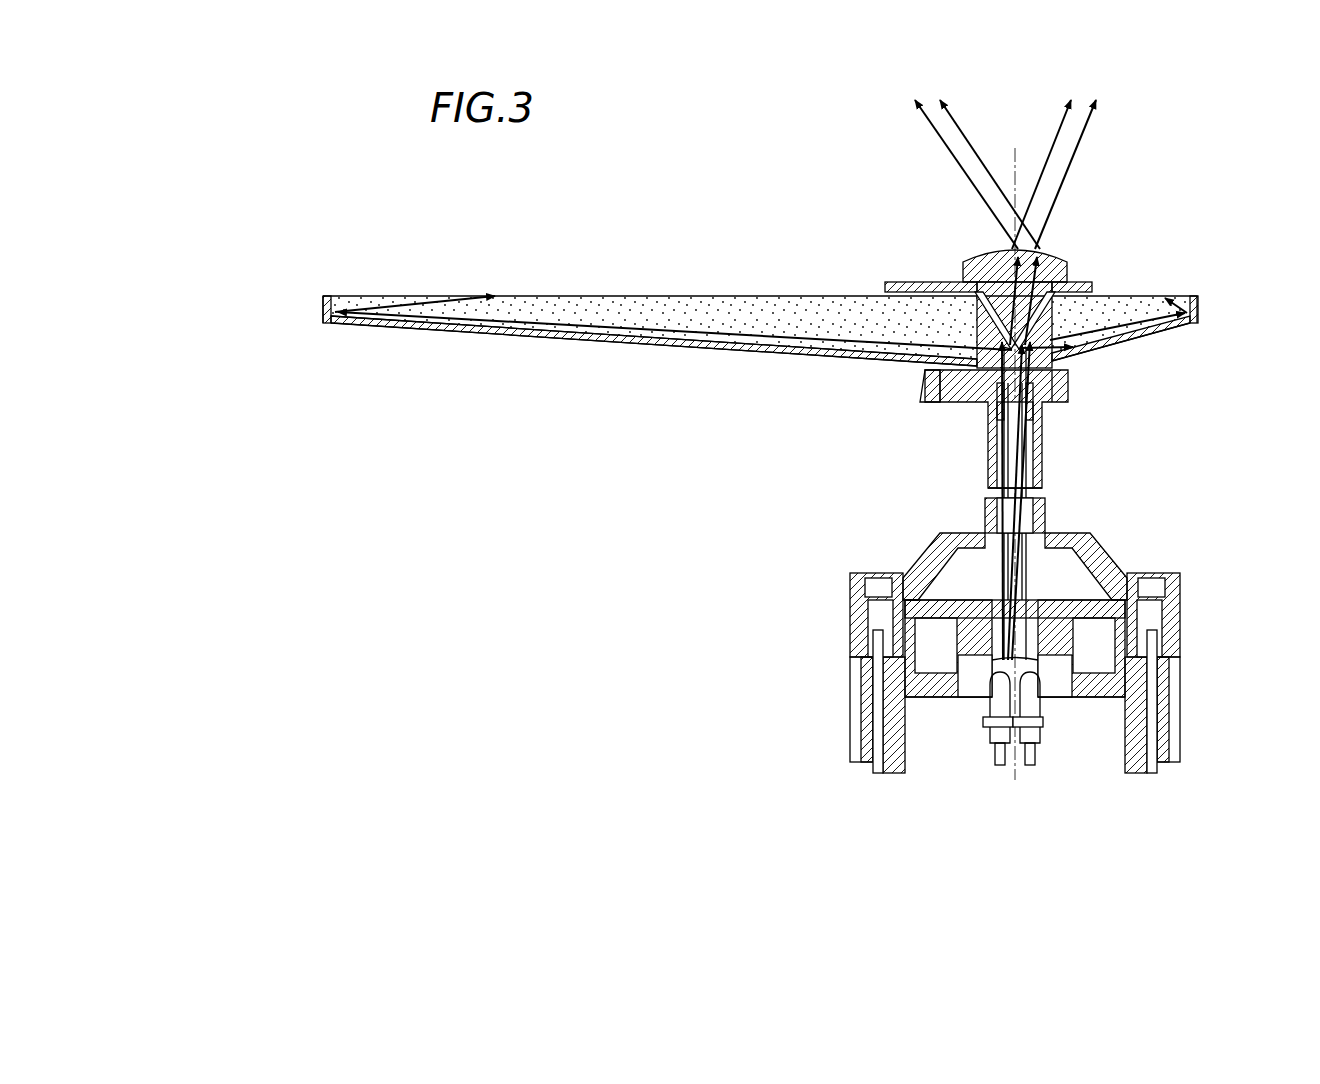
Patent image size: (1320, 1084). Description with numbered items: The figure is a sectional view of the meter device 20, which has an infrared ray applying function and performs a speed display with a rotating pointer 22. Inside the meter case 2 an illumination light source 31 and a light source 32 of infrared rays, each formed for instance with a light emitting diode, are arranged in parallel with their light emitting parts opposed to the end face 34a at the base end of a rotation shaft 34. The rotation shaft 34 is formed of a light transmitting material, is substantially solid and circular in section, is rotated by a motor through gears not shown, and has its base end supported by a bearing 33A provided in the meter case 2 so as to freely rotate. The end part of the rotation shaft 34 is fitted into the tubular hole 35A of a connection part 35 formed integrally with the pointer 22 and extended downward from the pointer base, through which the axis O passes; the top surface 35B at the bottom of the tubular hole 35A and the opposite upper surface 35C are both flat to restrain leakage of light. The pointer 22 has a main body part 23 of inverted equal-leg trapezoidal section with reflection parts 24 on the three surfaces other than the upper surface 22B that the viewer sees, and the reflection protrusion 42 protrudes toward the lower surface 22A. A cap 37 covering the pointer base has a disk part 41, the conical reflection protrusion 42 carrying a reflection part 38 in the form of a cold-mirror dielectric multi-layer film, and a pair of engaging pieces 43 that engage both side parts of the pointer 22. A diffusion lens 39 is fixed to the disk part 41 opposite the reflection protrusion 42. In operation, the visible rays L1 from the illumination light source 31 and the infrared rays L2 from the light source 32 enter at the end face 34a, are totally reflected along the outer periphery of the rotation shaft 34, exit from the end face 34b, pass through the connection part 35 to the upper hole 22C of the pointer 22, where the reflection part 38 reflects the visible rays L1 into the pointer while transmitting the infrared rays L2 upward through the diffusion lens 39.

The meter device 20 is at (724, 186).
The pointer 22 is at (544, 283).
The lower surface of the pointer 22A is at (966, 413).
The upper surface of the pointer 22B is at (686, 295).
The upper hole of the pointer 22C is at (968, 335).
The main body part 23 is at (622, 322).
The reflection parts 24 is at (436, 338).
The meter case 2 is at (848, 626).
The illumination light source 31 is at (1036, 705).
The light source of infrared rays 32 is at (992, 700).
The bearing 33A is at (1046, 523).
The rotation shaft 34 is at (1000, 465).
The end face in the base end part side of the rotation shaft 34a is at (1036, 662).
The end face of the end part side of the rotation shaft 34b is at (1032, 418).
The connection part 35 is at (1034, 447).
The tubular hole 35A is at (990, 490).
The top surface 35B is at (1000, 432).
The upper surface 35C is at (926, 390).
The cap 37 is at (896, 282).
The reflection part 38 is at (1060, 343).
The diffusion lens 39 is at (982, 262).
The disk part 41 is at (1090, 282).
The reflection protrusion 42 is at (1032, 304).
The engaging pieces 43 is at (1072, 385).
The visible rays L1 is at (776, 340).
The infrared rays L2 is at (958, 150).
The axis O is at (1016, 152).